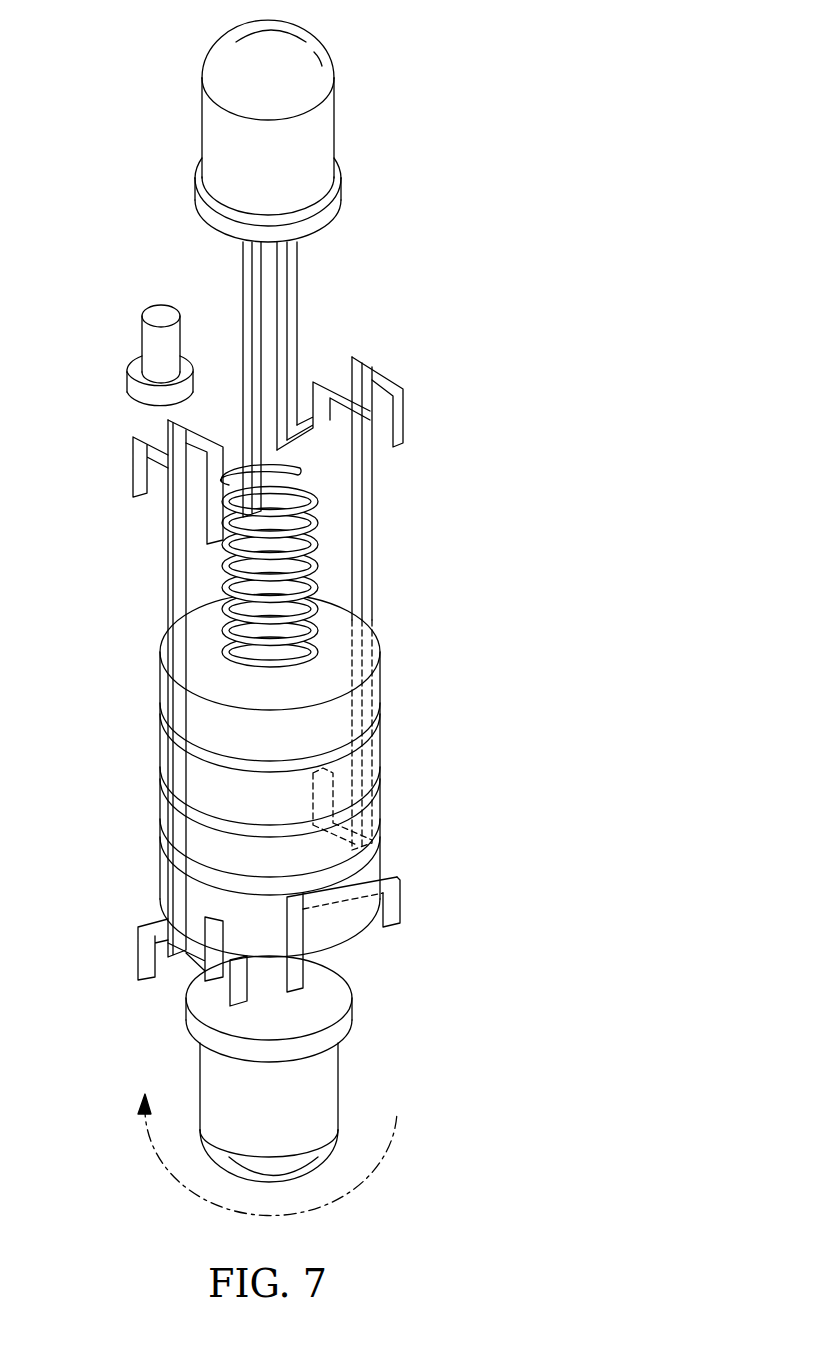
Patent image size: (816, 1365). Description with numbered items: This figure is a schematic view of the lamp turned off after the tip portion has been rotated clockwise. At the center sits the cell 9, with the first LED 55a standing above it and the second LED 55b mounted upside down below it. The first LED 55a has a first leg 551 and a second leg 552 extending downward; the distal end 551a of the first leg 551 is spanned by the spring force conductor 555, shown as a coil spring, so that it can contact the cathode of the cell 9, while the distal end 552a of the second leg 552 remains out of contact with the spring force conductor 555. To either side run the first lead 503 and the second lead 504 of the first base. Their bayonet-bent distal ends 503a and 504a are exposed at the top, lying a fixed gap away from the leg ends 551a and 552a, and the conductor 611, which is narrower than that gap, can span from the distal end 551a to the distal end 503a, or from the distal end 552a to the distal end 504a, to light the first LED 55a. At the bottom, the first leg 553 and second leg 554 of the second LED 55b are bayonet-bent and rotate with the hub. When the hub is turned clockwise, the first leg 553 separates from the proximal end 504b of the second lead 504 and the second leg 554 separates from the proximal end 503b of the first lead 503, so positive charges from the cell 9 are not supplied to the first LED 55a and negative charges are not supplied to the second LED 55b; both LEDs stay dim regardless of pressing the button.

The cell 9 is at (337, 660).
The first LED 55a is at (225, 72).
The second LED 55b is at (320, 1070).
The first leg 551 is at (243, 315).
The distal end of first leg 551a is at (205, 427).
The second leg 552 is at (293, 282).
The distal end of second leg 552a is at (314, 380).
The first lead 503 is at (173, 647).
The distal end of first lead 503a is at (137, 473).
The proximal end of first lead 503b is at (140, 950).
The second lead 504 is at (360, 562).
The distal end of second lead 504a is at (387, 380).
The proximal end of second lead 504b is at (357, 840).
The first leg of second LED 553 is at (397, 875).
The second leg of second LED 554 is at (138, 967).
The spring force conductor 555 is at (230, 560).
The conductor 611 is at (137, 367).